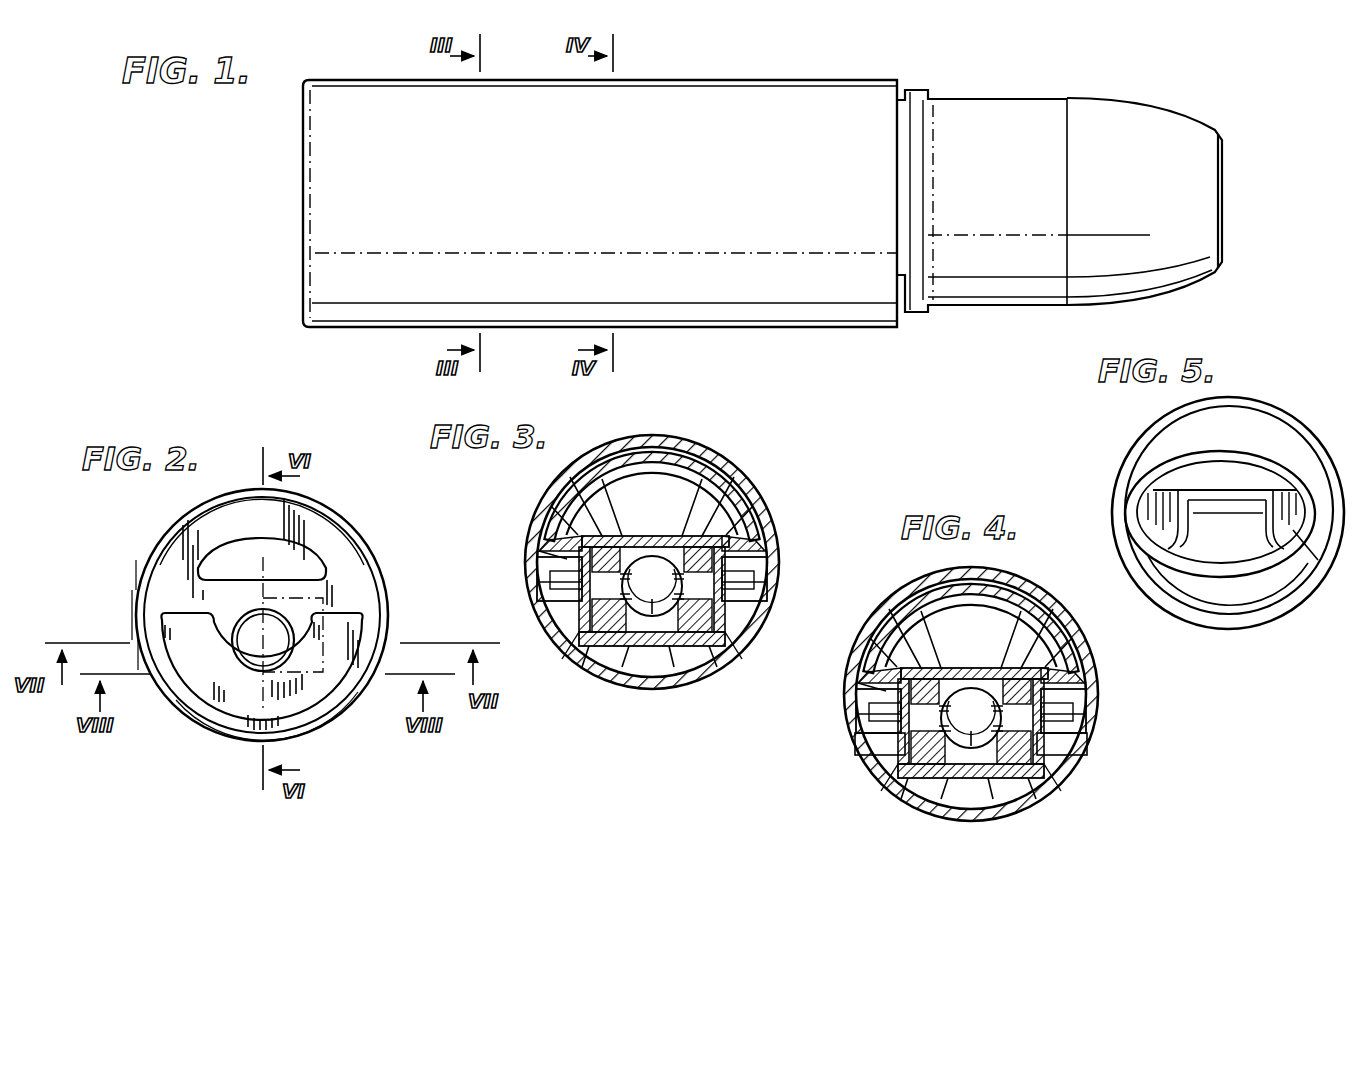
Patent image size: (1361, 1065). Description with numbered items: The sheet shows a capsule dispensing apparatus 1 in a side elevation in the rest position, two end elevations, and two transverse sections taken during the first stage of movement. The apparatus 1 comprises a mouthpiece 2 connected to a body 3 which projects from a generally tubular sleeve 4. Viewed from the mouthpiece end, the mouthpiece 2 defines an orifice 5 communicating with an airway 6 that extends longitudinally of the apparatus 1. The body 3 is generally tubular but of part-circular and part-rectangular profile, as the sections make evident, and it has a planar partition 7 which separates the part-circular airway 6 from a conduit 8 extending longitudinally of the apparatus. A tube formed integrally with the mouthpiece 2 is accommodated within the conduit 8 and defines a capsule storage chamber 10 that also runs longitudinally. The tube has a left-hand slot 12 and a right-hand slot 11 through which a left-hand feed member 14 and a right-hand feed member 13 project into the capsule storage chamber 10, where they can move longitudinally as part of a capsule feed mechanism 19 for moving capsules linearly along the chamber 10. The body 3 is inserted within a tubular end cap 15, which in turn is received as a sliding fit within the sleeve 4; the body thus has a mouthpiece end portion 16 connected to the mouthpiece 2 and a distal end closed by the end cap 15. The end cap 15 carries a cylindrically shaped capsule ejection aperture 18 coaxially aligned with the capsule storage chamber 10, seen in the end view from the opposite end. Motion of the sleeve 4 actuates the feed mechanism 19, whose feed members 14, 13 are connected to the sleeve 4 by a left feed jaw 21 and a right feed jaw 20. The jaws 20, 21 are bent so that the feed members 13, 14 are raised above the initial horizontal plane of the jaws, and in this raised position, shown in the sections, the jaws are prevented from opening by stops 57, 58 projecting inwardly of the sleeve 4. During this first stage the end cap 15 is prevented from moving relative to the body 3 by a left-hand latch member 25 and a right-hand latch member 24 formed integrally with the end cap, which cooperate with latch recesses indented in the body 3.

In FIG. 1, the apparatus 1 is at (288, 227).
In FIG. 2, the apparatus 1 is at (120, 588).
In FIG. 3, the apparatus 1 is at (488, 486).
In FIG. 4, the apparatus 1 is at (875, 562).
In FIG. 5, the apparatus 1 is at (1120, 412).
In FIG. 1, the mouthpiece 2 is at (1118, 130).
In FIG. 5, the mouthpiece 2 is at (1230, 425).
In FIG. 1, the body 3 is at (966, 124).
In FIG. 3, the body 3 is at (668, 452).
In FIG. 4, the body 3 is at (970, 605).
In FIG. 1, the sleeve 4 is at (708, 98).
In FIG. 2, the sleeve 4 is at (190, 520).
In FIG. 3, the sleeve 4 is at (633, 445).
In FIG. 4, the sleeve 4 is at (971, 687).
In FIG. 5, the sleeve 4 is at (1310, 440).
In FIG. 1, the orifice 5 is at (1222, 155).
In FIG. 5, the orifice 5 is at (1293, 530).
In FIG. 3, the airway 6 is at (670, 482).
In FIG. 4, the airway 6 is at (971, 611).
In FIG. 5, the airway 6 is at (1197, 480).
In FIG. 3, the planar partition 7 is at (720, 495).
In FIG. 4, the planar partition 7 is at (985, 637).
In FIG. 3, the conduit 8 is at (748, 520).
In FIG. 4, the conduit 8 is at (1063, 638).
In FIG. 3, the capsule storage chamber 10 is at (660, 620).
In FIG. 4, the capsule storage chamber 10 is at (994, 748).
In FIG. 3, the right-hand slot 11 is at (548, 508).
In FIG. 4, the right-hand slot 11 is at (849, 655).
In FIG. 3, the left-hand slot 12 is at (575, 497).
In FIG. 4, the left-hand slot 12 is at (862, 634).
In FIG. 3, the right-hand feed member 13 is at (590, 610).
In FIG. 4, the right-hand feed member 13 is at (876, 802).
In FIG. 3, the left-hand feed member 14 is at (730, 607).
In FIG. 4, the left-hand feed member 14 is at (1095, 760).
In FIG. 2, the end cap 15 is at (178, 570).
In FIG. 3, the end cap 15 is at (650, 650).
In FIG. 4, the end cap 15 is at (977, 772).
In FIG. 1, the mouthpiece end portion 16 is at (985, 303).
In FIG. 2, the capsule ejection aperture 18 is at (255, 650).
In FIG. 3, the capsule feed mechanism 19 is at (607, 655).
In FIG. 4, the capsule feed mechanism 19 is at (961, 781).
In FIG. 3, the right feed jaw 20 is at (562, 568).
In FIG. 4, the right feed jaw 20 is at (842, 711).
In FIG. 3, the left feed jaw 21 is at (760, 572).
In FIG. 4, the left feed jaw 21 is at (1102, 700).
In FIG. 4, the right-hand latch member 24 is at (848, 750).
In FIG. 4, the left-hand latch member 25 is at (1089, 766).
In FIG. 3, the stop 57 is at (770, 545).
In FIG. 4, the stop 57 is at (1100, 717).
In FIG. 3, the stop 58 is at (547, 583).
In FIG. 4, the stop 58 is at (841, 699).